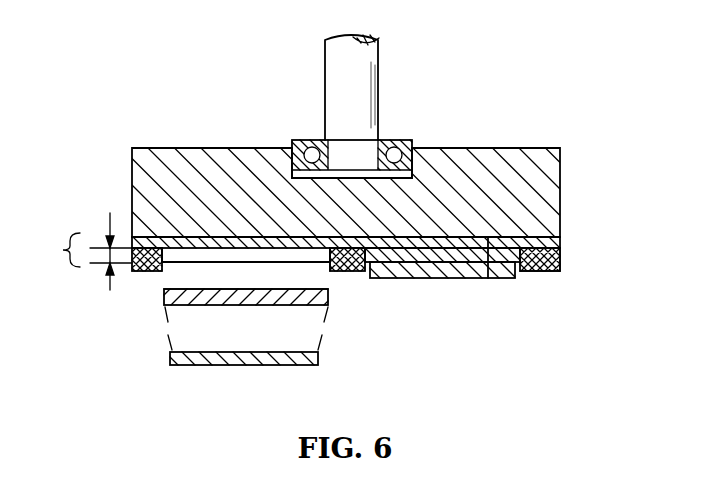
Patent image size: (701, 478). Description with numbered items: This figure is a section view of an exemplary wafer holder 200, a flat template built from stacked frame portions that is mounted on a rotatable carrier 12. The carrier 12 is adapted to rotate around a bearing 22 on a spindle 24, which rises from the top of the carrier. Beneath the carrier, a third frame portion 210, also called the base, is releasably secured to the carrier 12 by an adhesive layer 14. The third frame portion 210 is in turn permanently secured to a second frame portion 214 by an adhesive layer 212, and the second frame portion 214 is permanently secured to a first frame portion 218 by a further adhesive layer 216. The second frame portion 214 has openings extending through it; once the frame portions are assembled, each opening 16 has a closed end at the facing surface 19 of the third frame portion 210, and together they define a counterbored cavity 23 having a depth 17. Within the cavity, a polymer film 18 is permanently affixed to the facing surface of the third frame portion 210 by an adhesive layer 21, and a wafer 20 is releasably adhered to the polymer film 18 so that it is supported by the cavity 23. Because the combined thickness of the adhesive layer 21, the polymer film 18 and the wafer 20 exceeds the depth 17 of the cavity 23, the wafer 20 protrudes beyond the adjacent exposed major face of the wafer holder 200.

The carrier 12 is at (553, 180).
The adhesive layer 14 is at (489, 278).
The opening 16 is at (180, 262).
The depth 17 is at (105, 249).
The polymer film 18 is at (327, 298).
The surface 19 is at (206, 256).
The wafer 20 is at (170, 358).
The adhesive layer 21 is at (302, 291).
The bearing 22 is at (403, 143).
The cavity 23 is at (243, 256).
The spindle 24 is at (362, 68).
The wafer holder 200 is at (63, 250).
The third frame portion 210 is at (562, 241).
The adhesive layer 212 is at (533, 272).
The second frame portion 214 is at (152, 248).
The adhesive layer 216 is at (549, 272).
The first frame portion 218 is at (561, 270).